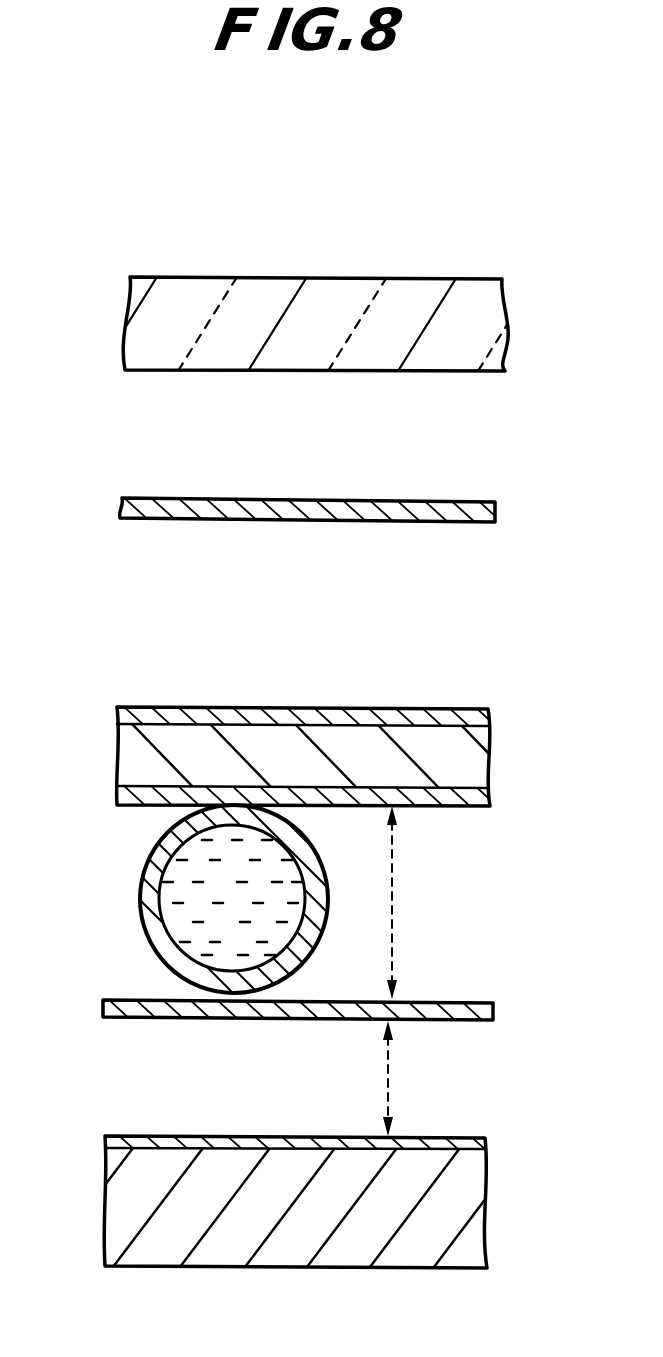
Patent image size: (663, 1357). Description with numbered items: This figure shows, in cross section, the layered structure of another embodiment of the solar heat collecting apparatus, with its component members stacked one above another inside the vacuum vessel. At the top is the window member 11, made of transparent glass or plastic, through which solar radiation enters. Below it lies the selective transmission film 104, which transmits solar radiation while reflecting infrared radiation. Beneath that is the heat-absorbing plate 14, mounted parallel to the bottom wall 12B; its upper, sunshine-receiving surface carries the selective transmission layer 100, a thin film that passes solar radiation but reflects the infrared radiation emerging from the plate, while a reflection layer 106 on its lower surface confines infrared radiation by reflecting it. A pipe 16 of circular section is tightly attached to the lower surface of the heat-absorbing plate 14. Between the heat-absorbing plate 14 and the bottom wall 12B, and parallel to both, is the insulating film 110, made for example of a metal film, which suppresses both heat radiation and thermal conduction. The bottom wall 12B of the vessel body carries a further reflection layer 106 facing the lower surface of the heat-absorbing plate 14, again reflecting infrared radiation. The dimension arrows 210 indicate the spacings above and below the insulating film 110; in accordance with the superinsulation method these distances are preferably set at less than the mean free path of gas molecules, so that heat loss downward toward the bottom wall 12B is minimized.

The window member 11 is at (459, 277).
The selective transmission film 104 is at (471, 499).
The selective transmission layer 100 is at (470, 707).
The heat-absorbing plate 14 is at (478, 758).
The reflection layer 106 is at (478, 806).
The pipe 16 is at (140, 893).
The gap 210 is at (396, 928).
The insulating film 110 is at (468, 1001).
The bottom wall 12B is at (460, 1210).